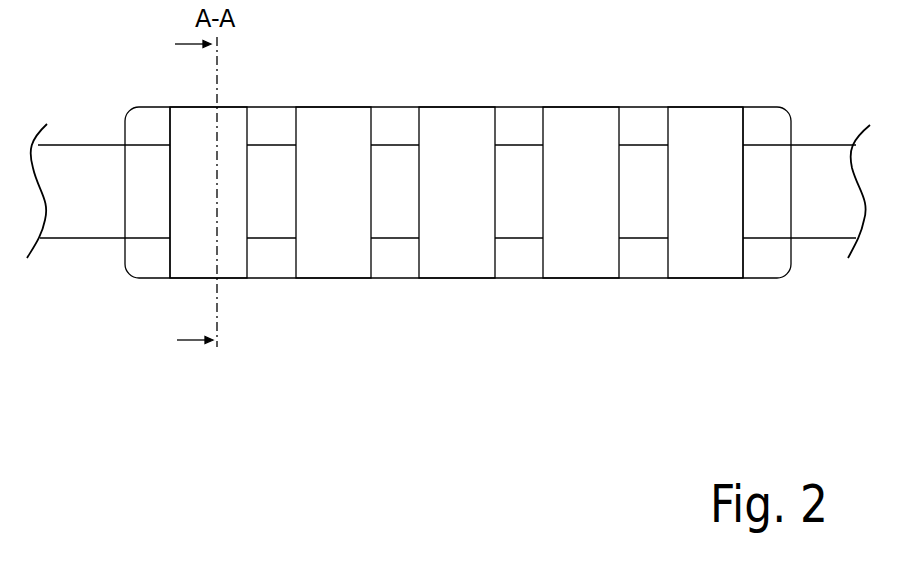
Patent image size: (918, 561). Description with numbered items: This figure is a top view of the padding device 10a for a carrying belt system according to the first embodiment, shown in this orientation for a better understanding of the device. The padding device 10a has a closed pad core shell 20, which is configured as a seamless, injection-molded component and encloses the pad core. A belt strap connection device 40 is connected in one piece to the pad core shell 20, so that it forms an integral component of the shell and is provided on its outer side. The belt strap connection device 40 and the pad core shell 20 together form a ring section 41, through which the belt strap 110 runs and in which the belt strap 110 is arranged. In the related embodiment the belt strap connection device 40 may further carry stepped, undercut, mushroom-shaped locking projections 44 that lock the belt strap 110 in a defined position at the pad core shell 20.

The padding device 10a is at (448, 197).
The pad core shell 20 is at (772, 101).
The belt strap connection device 40 is at (464, 197).
The ring section 41 is at (237, 258).
The locking projections 44 is at (709, 258).
The belt strap 110 is at (655, 162).